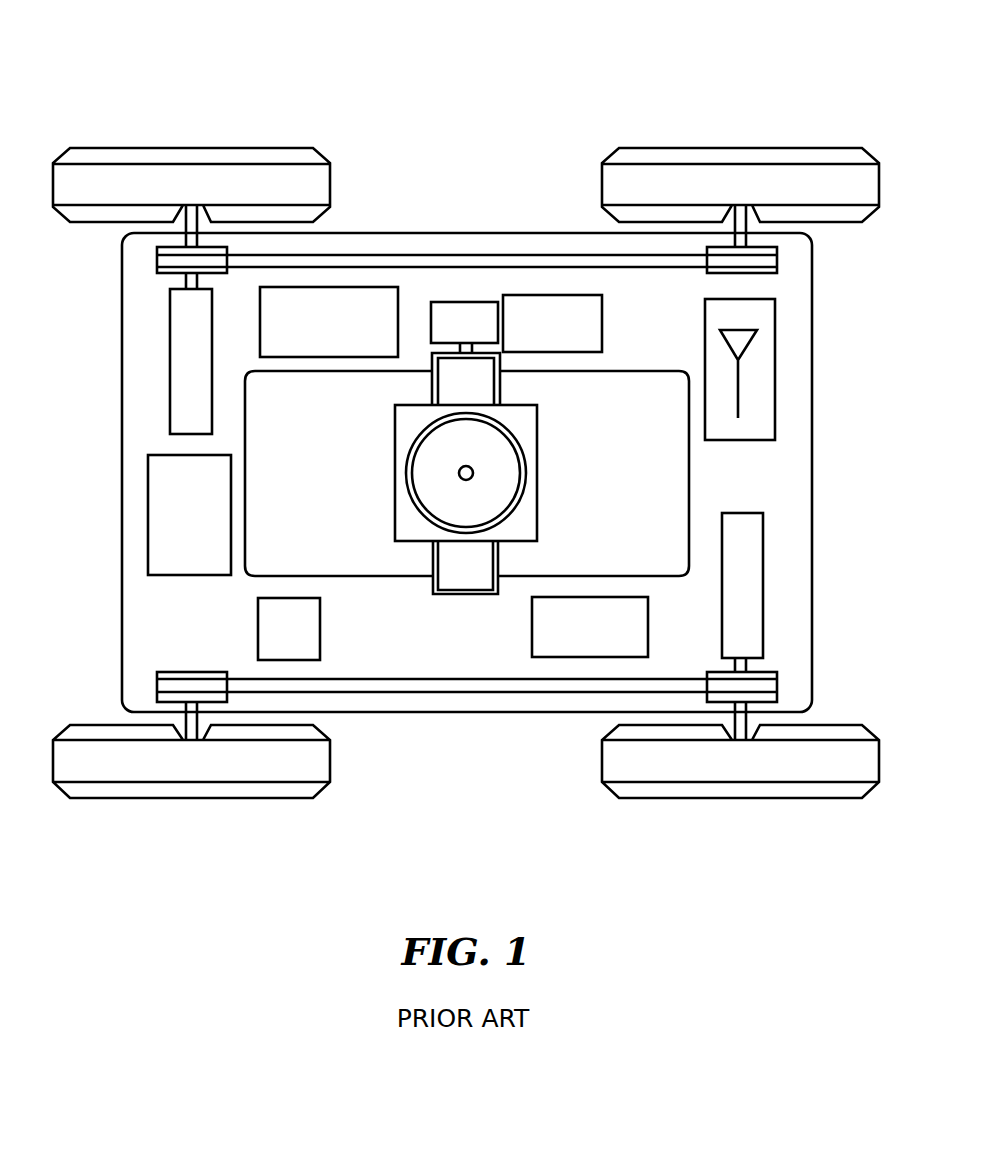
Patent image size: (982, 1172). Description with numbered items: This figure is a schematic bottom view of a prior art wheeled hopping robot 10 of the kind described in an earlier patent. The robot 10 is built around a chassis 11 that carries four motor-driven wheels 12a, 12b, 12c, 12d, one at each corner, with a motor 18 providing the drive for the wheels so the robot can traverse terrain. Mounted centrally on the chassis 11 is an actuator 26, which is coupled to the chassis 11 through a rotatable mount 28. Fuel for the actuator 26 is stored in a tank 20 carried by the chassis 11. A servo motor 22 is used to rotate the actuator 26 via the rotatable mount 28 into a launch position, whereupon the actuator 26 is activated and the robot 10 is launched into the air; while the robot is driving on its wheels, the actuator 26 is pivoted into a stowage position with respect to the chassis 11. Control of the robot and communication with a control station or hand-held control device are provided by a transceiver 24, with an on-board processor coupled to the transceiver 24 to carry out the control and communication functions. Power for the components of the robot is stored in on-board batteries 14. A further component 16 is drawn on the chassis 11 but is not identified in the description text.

The wheeled hopping robot 10 is at (386, 62).
The chassis 11 is at (774, 492).
The wheel 12a is at (192, 148).
The wheel 12b is at (713, 148).
The wheel 12c is at (740, 798).
The wheel 12d is at (192, 798).
The on-board batteries 14 is at (274, 641).
The battery 16 is at (172, 534).
The motor 18 is at (178, 377).
The tank 20 is at (566, 642).
The servo motor 22 is at (453, 333).
The transceiver 24 is at (752, 416).
The actuator 26 is at (497, 476).
The rotatable mount 28 is at (482, 565).